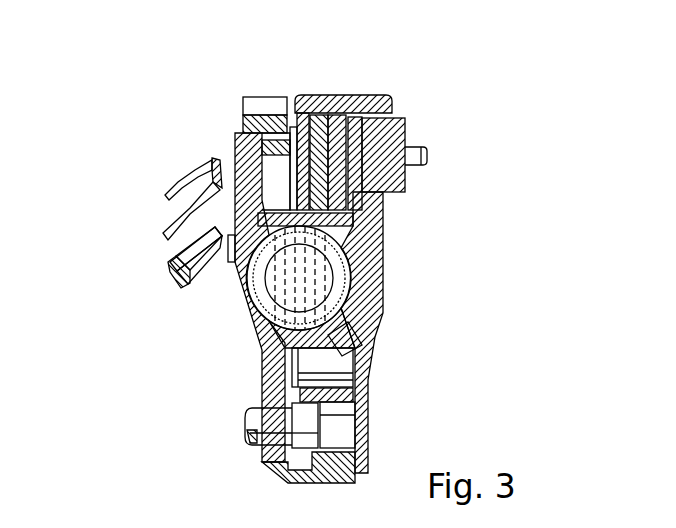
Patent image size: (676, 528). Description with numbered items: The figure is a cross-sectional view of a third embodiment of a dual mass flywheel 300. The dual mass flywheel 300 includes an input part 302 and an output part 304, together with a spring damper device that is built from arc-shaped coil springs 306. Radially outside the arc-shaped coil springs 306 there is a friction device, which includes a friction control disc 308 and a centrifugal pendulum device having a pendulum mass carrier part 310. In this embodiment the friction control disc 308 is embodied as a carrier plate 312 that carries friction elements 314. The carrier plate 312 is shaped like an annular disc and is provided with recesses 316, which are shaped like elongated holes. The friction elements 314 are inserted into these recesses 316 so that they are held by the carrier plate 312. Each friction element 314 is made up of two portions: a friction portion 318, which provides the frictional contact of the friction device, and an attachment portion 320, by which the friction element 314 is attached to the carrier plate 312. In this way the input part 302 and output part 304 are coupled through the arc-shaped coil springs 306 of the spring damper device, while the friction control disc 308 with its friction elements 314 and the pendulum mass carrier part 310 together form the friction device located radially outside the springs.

The dual mass flywheel 300 is at (370, 424).
The input part 302 is at (226, 389).
The output part 304 is at (394, 284).
The arc-shaped coil springs 306 is at (360, 334).
The friction control disc 308 is at (293, 145).
The pendulum mass carrier part 310 is at (359, 137).
The carrier plate 312 is at (208, 158).
The friction elements 314 is at (181, 294).
The recesses 316 is at (189, 177).
The friction portion 318 is at (206, 264).
The attachment portion 320 is at (170, 278).